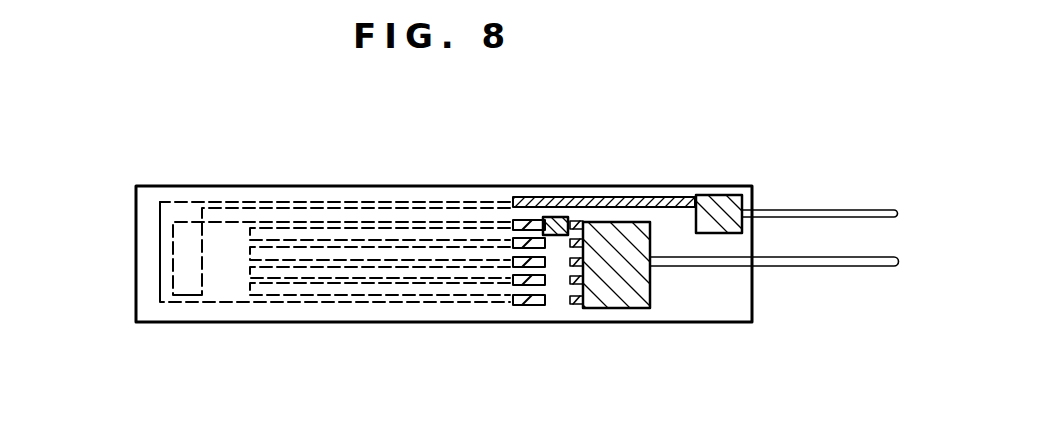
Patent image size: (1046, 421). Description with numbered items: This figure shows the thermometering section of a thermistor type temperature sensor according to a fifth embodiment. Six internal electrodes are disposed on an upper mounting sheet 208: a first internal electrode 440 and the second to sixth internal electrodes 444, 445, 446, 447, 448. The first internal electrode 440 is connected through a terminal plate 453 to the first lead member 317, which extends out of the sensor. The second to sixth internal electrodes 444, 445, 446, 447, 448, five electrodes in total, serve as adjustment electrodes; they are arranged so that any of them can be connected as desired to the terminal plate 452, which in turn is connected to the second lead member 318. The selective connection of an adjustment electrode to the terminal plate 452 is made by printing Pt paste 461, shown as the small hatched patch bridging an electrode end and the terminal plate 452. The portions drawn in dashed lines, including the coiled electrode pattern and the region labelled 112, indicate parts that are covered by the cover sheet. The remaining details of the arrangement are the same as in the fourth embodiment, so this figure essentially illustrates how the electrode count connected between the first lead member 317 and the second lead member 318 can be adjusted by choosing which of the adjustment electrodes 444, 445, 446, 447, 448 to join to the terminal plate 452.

The upper mounting sheet 208 is at (135, 254).
The inner conductor loop 112 is at (227, 281).
The second internal electrode 444 is at (331, 225).
The third internal electrode 445 is at (437, 235).
The fourth internal electrode 446 is at (318, 262).
The fifth internal electrode 447 is at (518, 284).
The sixth internal electrode 448 is at (528, 305).
The first internal electrode 440 is at (661, 205).
The terminal plate 453 is at (718, 205).
The first lead member 317 is at (848, 208).
The second lead member 318 is at (843, 270).
The Pt paste 461 is at (557, 237).
The terminal plate 452 is at (628, 298).